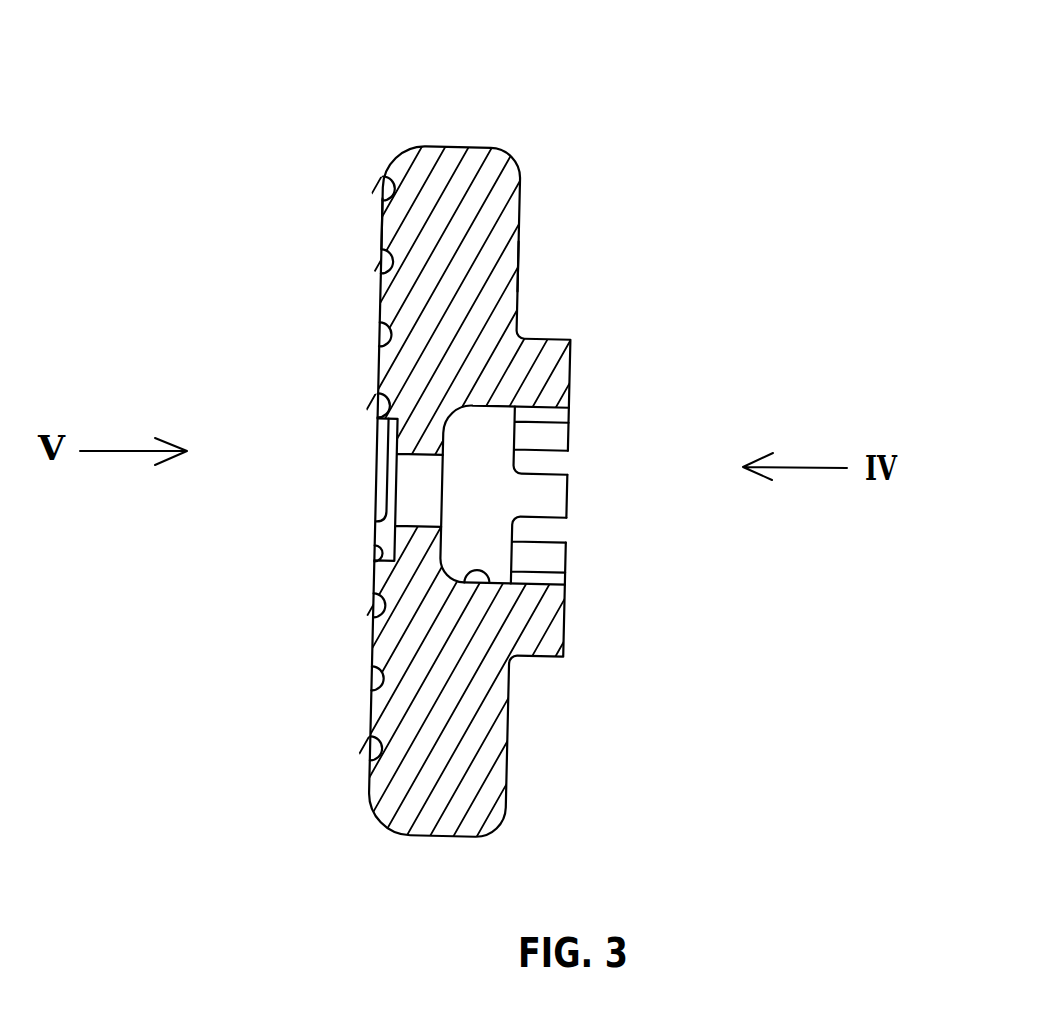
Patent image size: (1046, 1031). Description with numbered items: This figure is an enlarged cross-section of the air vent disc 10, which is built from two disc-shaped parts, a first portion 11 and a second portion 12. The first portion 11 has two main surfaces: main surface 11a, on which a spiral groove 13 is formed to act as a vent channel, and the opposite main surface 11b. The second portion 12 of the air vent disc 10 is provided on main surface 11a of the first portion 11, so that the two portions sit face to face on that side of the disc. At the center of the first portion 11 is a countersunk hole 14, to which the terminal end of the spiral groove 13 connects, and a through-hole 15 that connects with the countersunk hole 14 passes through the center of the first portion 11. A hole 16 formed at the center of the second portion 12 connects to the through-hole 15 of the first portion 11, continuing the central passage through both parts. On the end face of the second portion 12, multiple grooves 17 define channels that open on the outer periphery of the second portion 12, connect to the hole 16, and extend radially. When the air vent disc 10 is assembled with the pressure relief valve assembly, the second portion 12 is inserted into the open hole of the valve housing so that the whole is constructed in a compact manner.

The air vent disc 10 is at (583, 75).
The first portion 11 is at (430, 838).
The main surface 11a is at (382, 222).
The main surface 11b is at (518, 262).
The second portion 12 is at (549, 647).
The spiral groove 13 is at (382, 342).
The countersunk hole 14 is at (380, 555).
The through-hole 15 is at (402, 505).
The hole 16 is at (493, 583).
The grooves 17 is at (553, 450).